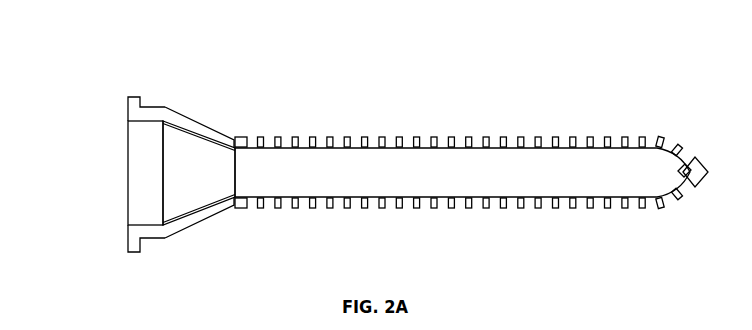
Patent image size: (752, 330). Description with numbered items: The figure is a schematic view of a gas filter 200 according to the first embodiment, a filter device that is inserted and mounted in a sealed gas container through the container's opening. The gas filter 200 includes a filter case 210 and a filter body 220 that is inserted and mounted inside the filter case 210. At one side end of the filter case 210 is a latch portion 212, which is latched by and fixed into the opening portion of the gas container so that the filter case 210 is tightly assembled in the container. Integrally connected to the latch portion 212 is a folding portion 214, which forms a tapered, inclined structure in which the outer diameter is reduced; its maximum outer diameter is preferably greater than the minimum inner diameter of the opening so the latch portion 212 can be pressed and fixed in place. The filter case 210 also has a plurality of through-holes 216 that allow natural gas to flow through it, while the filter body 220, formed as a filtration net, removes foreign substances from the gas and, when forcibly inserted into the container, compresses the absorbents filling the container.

The gas filter 200 is at (152, 33).
The latch portion 212 is at (129, 99).
The folding portion 214 is at (200, 121).
The filter case 210 is at (329, 133).
The through-holes 216 is at (413, 142).
The filter body 220 is at (527, 144).